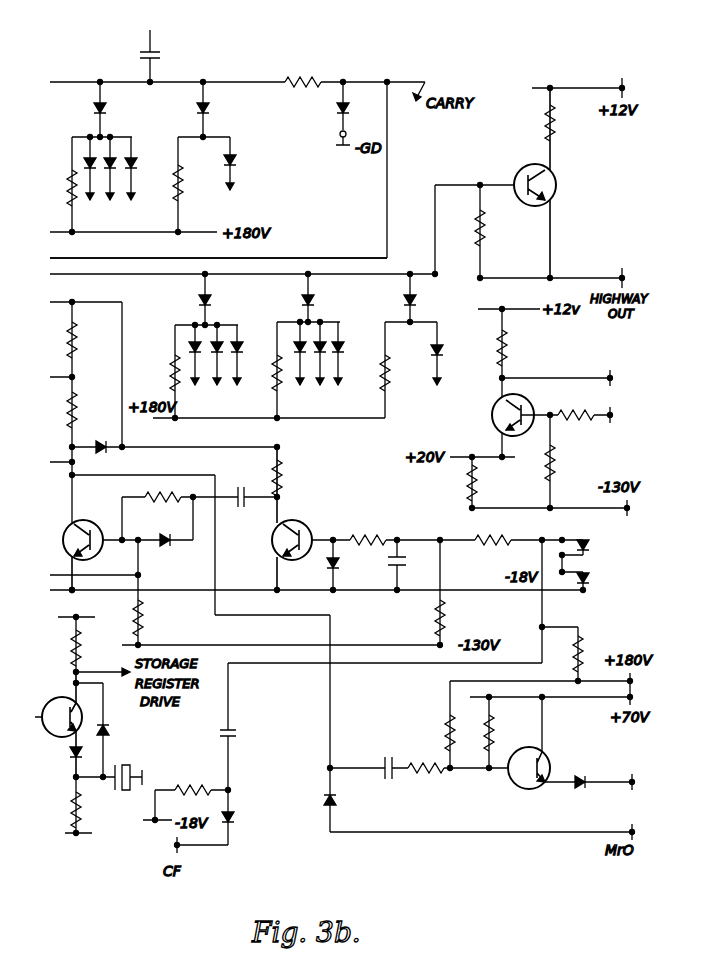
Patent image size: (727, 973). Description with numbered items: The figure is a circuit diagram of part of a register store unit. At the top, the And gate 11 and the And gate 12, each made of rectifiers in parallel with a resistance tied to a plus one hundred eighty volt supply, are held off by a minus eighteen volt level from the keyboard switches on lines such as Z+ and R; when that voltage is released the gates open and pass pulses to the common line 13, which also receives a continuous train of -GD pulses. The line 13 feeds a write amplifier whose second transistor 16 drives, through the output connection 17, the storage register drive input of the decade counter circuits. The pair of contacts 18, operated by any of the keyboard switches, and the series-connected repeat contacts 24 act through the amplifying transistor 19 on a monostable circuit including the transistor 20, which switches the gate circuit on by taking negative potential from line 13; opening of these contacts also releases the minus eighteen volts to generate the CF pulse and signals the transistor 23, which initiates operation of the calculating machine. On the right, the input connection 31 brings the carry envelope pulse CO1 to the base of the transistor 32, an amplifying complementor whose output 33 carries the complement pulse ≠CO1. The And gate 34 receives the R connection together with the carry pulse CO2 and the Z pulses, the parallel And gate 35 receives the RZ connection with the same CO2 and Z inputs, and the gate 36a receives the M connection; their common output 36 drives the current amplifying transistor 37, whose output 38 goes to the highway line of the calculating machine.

The And gate 11 is at (80, 142).
The And gate 12 is at (178, 137).
The line 13 is at (125, 262).
The second transistor 16 is at (60, 701).
The output connection 17 is at (99, 670).
The pair of contacts 18 is at (592, 545).
The amplifying transistor 19 is at (304, 530).
The transistor 20 is at (92, 522).
The transistor 23 is at (546, 756).
The pair of switch contacts 24 is at (582, 586).
The input connection 31 is at (590, 420).
The transistor 32 is at (491, 418).
The output 33 is at (569, 381).
The And gate 34 is at (312, 388).
The And gate 35 is at (210, 388).
The output 36 is at (448, 184).
The gate 36a is at (412, 335).
The current amplifying transistor 37 is at (557, 185).
The output 38 is at (583, 276).